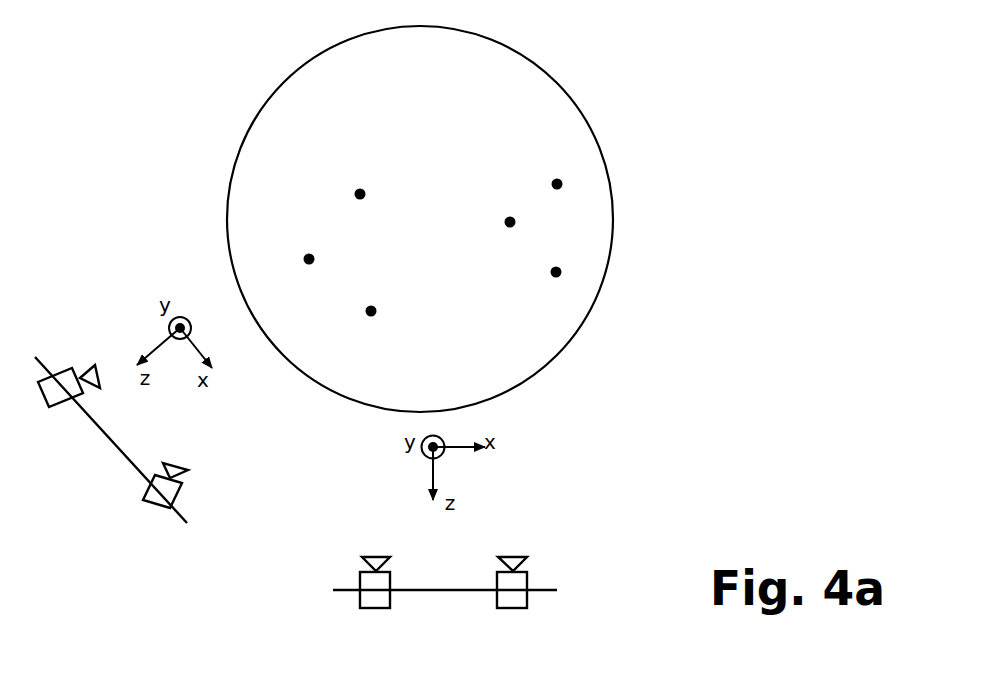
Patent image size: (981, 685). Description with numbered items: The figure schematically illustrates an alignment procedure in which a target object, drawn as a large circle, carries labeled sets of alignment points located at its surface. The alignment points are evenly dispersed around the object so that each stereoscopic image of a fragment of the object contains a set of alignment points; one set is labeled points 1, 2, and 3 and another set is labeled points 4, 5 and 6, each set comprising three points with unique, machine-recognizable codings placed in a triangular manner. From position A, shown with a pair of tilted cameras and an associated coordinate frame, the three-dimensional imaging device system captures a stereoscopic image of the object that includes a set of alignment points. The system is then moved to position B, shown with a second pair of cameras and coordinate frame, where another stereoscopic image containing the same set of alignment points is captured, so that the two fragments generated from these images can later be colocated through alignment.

The alignment point 1 is at (297, 254).
The alignment point 2 is at (351, 186).
The alignment point 3 is at (363, 301).
The alignment point 4 is at (501, 215).
The alignment point 5 is at (549, 174).
The alignment point 6 is at (547, 261).
The position A is at (111, 440).
The position B is at (445, 596).